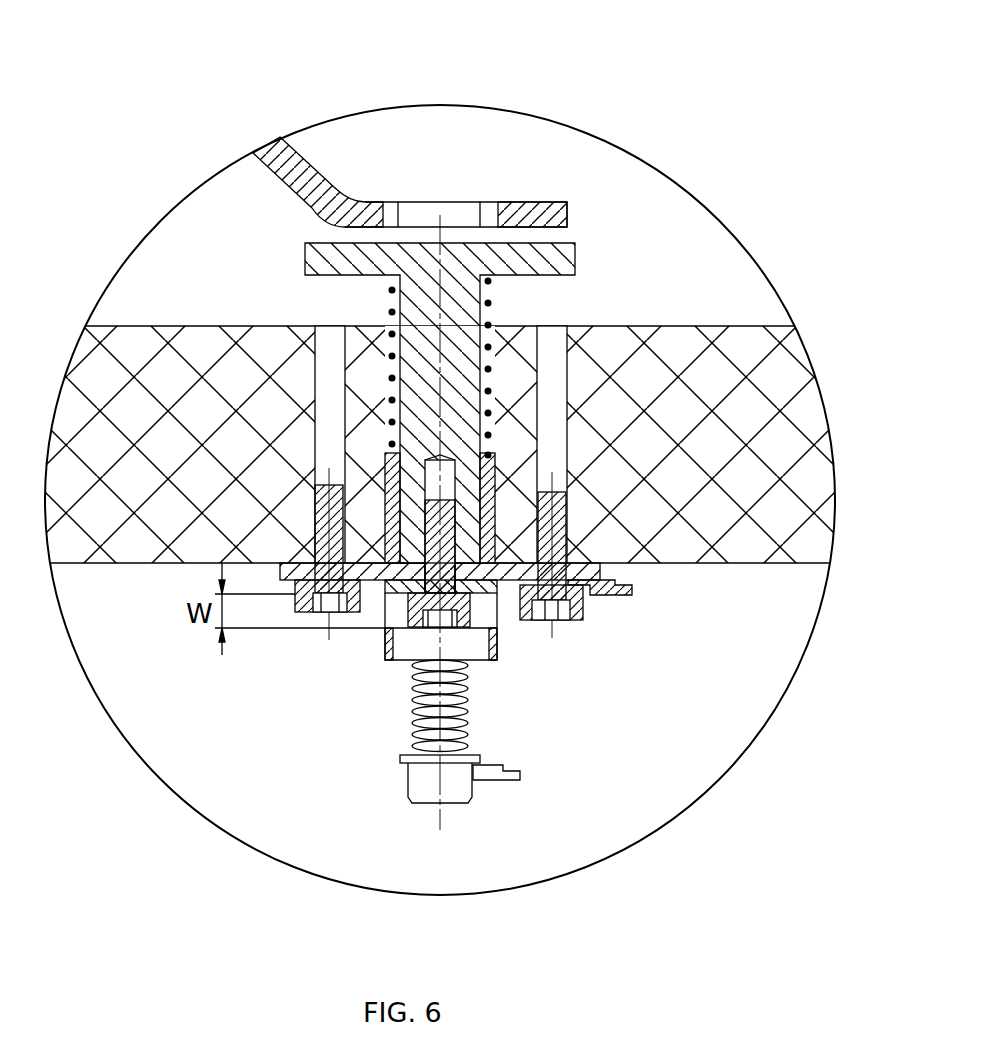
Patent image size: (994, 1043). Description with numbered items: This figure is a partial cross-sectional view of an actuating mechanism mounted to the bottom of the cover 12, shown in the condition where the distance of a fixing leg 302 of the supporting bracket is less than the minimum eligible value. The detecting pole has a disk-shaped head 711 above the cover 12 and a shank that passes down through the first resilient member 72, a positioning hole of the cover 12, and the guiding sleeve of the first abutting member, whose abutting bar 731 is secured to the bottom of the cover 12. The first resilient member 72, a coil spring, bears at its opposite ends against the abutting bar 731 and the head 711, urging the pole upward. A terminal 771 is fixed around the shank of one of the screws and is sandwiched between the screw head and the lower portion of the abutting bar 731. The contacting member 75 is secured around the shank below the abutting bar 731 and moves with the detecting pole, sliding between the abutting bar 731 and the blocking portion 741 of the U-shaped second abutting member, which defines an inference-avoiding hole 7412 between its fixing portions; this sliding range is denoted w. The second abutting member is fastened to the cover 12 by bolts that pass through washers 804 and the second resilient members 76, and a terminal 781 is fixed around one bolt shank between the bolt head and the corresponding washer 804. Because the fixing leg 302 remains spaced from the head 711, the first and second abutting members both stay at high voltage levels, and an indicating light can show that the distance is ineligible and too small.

The cover 12 is at (787, 382).
The fixing leg 302 is at (520, 210).
The head 711 is at (548, 257).
The first resilient member 72 is at (493, 297).
The abutting bar 731 is at (593, 590).
The terminal 771 is at (598, 580).
The contacting member 75 is at (495, 598).
The blocking portion 741 is at (385, 657).
The inference-avoiding hole 7412 is at (403, 648).
The second resilient member 76 is at (467, 707).
The washer 804 is at (401, 765).
The terminal 781 is at (490, 773).